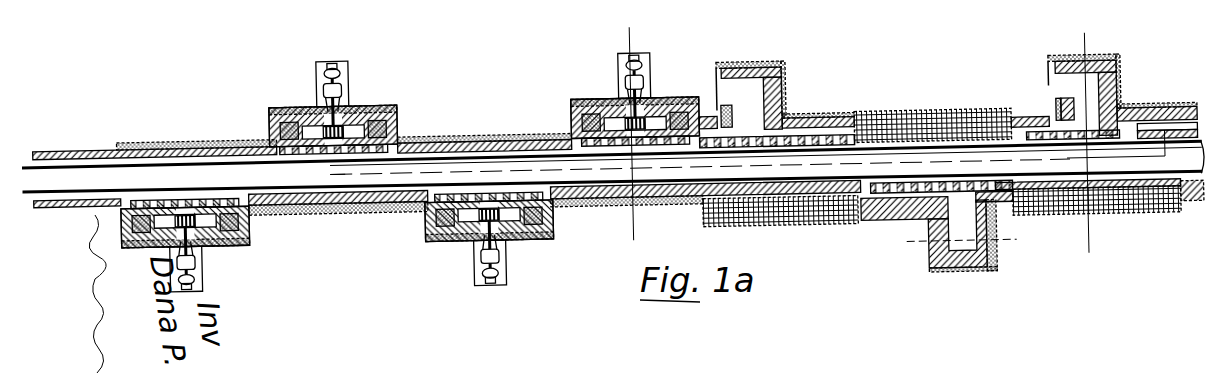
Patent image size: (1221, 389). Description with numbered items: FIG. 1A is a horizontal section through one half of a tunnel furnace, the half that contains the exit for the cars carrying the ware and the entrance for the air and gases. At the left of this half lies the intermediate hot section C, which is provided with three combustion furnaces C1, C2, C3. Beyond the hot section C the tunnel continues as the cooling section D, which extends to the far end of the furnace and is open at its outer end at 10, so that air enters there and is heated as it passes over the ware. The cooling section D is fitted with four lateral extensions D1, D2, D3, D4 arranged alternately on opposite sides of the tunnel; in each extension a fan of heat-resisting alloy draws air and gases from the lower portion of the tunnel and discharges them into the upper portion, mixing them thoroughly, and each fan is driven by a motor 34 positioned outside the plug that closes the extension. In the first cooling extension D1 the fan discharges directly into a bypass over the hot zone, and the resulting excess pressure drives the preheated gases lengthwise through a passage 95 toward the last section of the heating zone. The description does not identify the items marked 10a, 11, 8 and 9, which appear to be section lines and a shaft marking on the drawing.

The open outer end 10 is at (38, 178).
The shaft centre line 10a is at (333, 171).
The section line 11 is at (637, 136).
The motor 34 is at (318, 101).
The cooling section D is at (497, 150).
The first cooling zone lateral extension D1 is at (670, 111).
The lateral extension D2 is at (525, 256).
The lateral extension D3 is at (372, 114).
The lateral extension D4 is at (218, 249).
The intermediate hot section C is at (936, 129).
The combustion furnace C1 is at (1110, 79).
The combustion furnace C2 is at (975, 290).
The combustion furnace C3 is at (770, 78).
The section line 8 is at (1083, 148).
The section line 9 is at (959, 243).
The passage 95 is at (1152, 154).